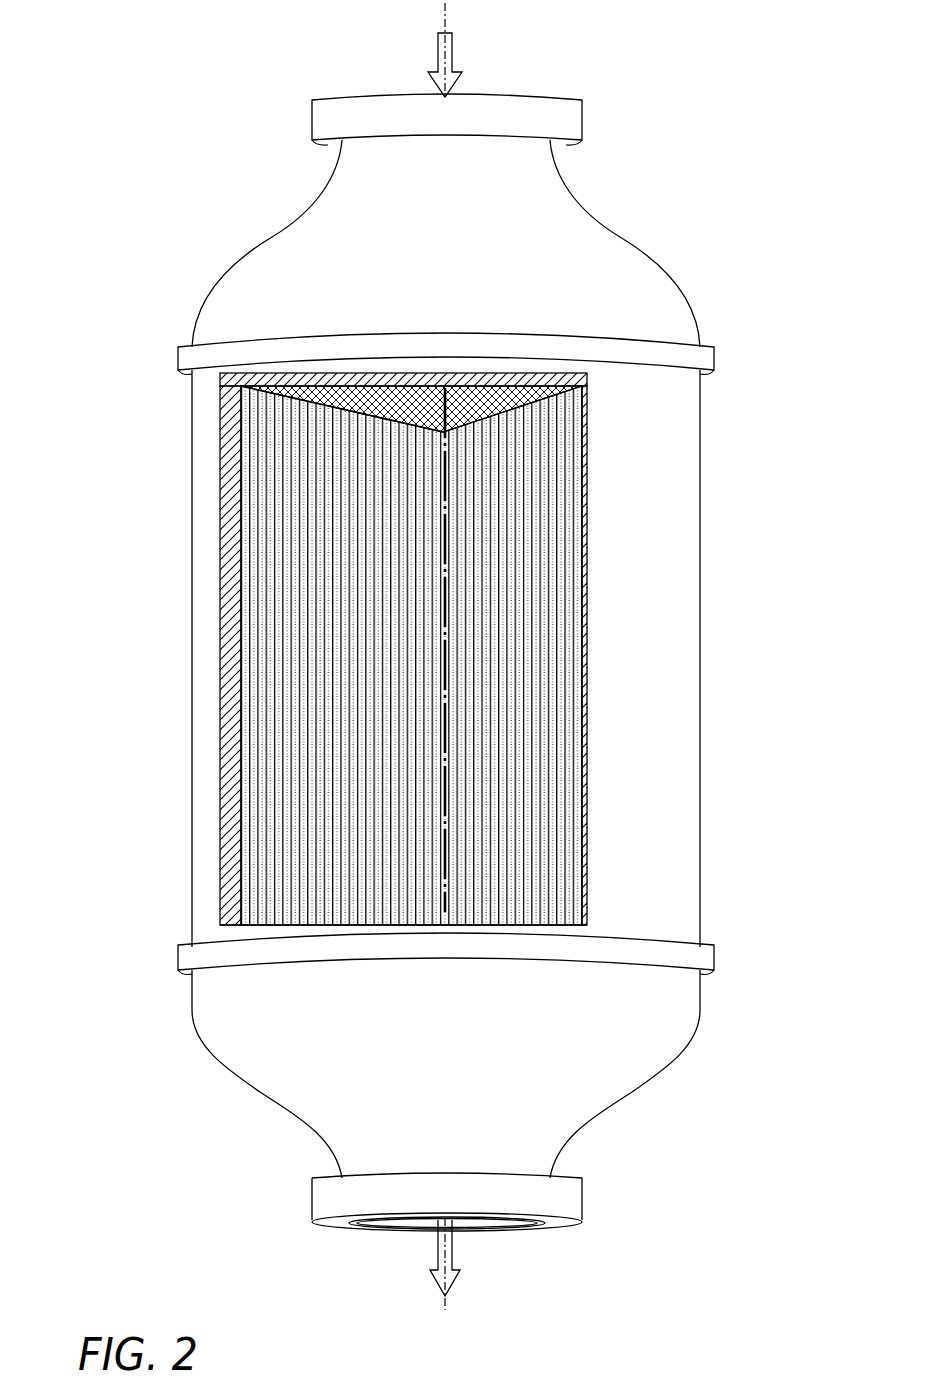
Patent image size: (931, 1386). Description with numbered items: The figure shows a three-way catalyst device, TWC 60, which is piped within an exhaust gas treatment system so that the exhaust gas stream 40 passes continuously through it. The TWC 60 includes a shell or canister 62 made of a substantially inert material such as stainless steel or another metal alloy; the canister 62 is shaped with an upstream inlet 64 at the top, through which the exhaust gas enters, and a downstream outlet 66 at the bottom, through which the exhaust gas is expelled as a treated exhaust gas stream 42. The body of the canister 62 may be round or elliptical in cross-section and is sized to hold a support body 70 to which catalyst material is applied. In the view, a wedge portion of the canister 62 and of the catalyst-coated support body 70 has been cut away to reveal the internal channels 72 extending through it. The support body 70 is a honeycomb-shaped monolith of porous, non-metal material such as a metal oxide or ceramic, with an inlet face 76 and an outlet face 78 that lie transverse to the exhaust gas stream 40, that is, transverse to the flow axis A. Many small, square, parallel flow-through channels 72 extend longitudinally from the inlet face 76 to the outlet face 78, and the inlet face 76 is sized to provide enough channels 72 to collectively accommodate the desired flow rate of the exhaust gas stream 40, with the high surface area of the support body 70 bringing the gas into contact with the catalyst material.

The three-way catalyst device (TWC) 60 is at (386, 655).
The canister 62 is at (250, 248).
The upstream inlet 64 is at (348, 98).
The downstream outlet 66 is at (387, 1229).
The exhaust gas stream 40 is at (453, 53).
The treated exhaust gas stream 42 is at (453, 1252).
The support body 70 is at (367, 656).
The flow-through channels 72 is at (285, 798).
The inlet face 76 is at (296, 398).
The outlet face 78 is at (305, 922).
The flow axis A is at (445, 620).